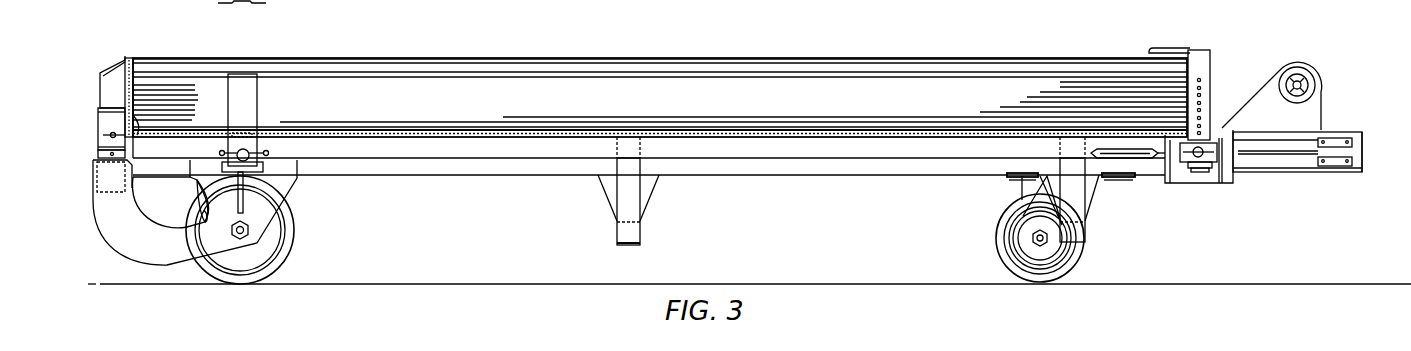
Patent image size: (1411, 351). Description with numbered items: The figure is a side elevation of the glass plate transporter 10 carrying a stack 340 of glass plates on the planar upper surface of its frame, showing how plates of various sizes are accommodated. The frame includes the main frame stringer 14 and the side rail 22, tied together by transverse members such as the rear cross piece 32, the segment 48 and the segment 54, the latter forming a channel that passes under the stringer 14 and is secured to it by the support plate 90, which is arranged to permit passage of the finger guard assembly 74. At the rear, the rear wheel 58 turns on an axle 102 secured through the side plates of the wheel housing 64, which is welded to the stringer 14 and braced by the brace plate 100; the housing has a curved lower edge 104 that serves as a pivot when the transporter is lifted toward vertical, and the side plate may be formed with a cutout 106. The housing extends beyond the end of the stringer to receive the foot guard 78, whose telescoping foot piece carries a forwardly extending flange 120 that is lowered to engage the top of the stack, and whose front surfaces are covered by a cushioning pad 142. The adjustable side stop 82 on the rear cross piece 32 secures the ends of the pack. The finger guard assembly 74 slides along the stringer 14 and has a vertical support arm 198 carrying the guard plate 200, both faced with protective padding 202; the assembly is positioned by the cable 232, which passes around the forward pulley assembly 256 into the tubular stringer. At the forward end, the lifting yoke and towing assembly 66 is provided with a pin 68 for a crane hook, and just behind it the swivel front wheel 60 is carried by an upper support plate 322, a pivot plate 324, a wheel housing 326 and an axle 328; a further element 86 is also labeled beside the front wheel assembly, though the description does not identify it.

The glass plate transporter 10 is at (1373, 118).
The main frame stringer 14 is at (737, 167).
The side rail 22 is at (833, 143).
The rear cross piece 32 is at (240, 132).
The segment 48 is at (1085, 222).
The segment 54 is at (642, 238).
The rear wheel 58 is at (275, 261).
The front wheel 60 is at (1073, 260).
The wheel housing 64 is at (195, 212).
The lifting yoke and towing assembly 66 is at (1300, 64).
The pin 68 is at (1302, 84).
The pack finger guard assembly 74 is at (1212, 175).
The foot guard 78 is at (109, 56).
The side stop 82 is at (258, 111).
The rear fork 86 is at (1092, 194).
The support plate 90 is at (602, 189).
The brace plate 100 is at (244, 190).
The axle 102 is at (250, 230).
The lower edge 104 is at (133, 251).
The cutout 106 is at (196, 196).
The flange 120 is at (131, 55).
The cushioning pad 142 is at (137, 130).
The vertical support arm 198 is at (1207, 88).
The guard plate 200 is at (1208, 50).
The protective padding 202 is at (1168, 48).
The cable 232 is at (1273, 156).
The forward pulley assembly 256 is at (1333, 173).
The upper support plate 322 is at (1010, 177).
The pivot plate 324 is at (1020, 181).
The wheel housing 326 is at (1040, 215).
The axle 328 is at (1033, 240).
The stack 340 is at (628, 76).